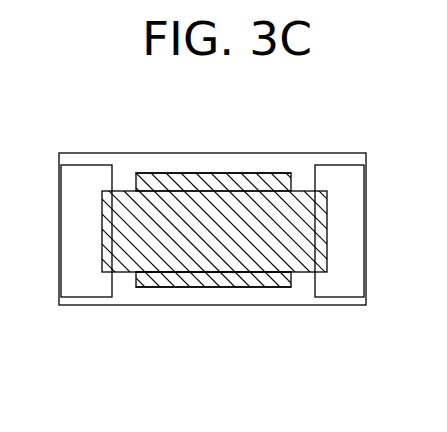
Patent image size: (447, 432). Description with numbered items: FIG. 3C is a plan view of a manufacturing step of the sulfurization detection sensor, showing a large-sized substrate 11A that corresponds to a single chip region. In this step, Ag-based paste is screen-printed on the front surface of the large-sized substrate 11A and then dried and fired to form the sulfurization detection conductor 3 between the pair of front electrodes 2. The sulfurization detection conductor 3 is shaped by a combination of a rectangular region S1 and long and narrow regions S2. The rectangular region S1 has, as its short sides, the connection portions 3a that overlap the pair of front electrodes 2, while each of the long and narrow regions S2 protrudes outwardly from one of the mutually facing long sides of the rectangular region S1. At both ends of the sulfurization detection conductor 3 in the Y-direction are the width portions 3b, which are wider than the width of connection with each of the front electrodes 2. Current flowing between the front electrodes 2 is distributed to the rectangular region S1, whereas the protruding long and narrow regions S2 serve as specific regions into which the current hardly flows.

The large-sized substrate 11A is at (325, 153).
The front electrodes 2 is at (83, 288).
The sulfurization detection conductor 3 is at (223, 237).
The connection portions 3a is at (128, 278).
The width portions 3b is at (270, 183).
The rectangular region S1 is at (213, 256).
The long and narrow regions S2 is at (187, 183).